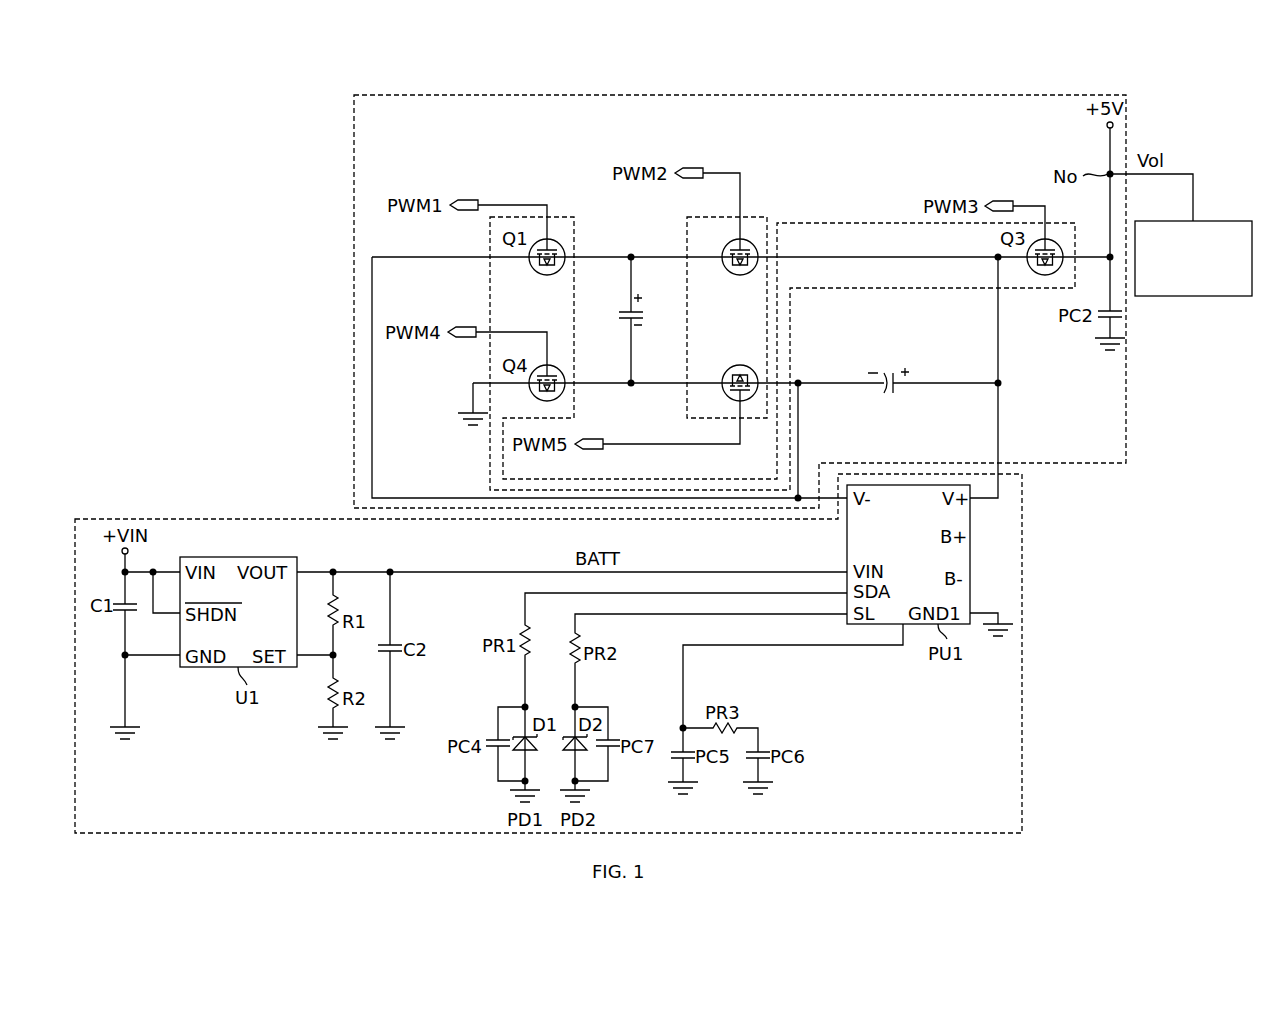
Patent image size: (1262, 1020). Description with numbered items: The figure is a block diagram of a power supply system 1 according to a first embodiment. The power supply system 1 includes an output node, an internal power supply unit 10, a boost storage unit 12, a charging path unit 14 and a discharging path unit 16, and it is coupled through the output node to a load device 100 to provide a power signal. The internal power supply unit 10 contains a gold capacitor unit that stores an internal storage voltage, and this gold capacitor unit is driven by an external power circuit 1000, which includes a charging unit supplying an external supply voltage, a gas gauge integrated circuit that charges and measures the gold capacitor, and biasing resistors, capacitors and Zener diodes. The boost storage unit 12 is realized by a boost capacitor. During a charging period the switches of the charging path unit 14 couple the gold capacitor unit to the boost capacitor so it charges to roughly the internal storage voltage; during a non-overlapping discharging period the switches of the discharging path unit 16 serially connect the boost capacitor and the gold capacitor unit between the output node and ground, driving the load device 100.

The power supply system 1 is at (1128, 425).
The internal power supply unit 10 is at (873, 388).
The boost storage unit 12 is at (625, 305).
The charging path unit 14 is at (762, 216).
The discharging path unit 16 is at (822, 223).
The load device 100 is at (1222, 220).
The external power circuit 1000 is at (1024, 656).